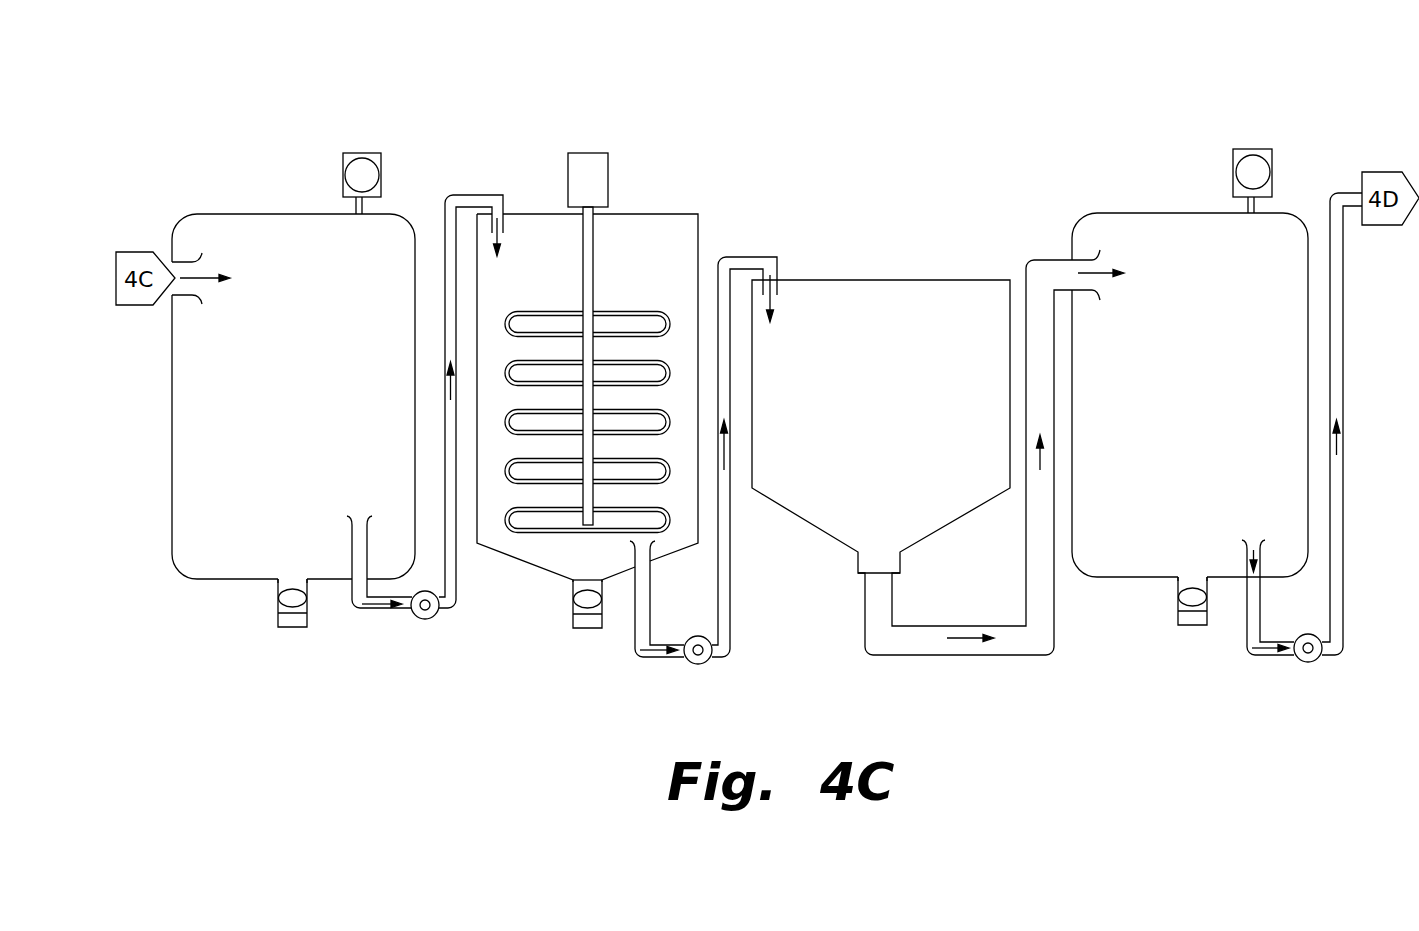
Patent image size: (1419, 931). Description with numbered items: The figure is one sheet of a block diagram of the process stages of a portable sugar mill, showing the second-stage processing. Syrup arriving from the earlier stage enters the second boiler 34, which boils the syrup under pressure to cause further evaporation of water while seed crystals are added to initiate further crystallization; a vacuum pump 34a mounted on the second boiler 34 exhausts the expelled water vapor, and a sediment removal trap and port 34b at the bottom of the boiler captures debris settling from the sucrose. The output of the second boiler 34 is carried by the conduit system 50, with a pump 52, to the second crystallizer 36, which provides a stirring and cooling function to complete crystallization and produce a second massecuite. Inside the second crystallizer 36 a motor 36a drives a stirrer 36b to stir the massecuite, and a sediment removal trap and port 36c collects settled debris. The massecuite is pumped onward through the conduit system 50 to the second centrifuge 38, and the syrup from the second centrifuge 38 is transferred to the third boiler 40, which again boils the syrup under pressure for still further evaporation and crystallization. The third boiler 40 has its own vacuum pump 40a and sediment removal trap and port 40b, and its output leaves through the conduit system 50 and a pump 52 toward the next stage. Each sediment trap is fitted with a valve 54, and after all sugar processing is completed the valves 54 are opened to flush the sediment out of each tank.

The second boiler 34 is at (230, 214).
The vacuum pump 34a is at (362, 153).
The sediment removal trap and port 34b is at (292, 566).
The second crystallizer 36 is at (580, 374).
The motor 36a is at (590, 153).
The stirrer 36b is at (522, 535).
The sediment removal trap and port 36c is at (585, 570).
The second centrifuge 38 is at (915, 280).
The third boiler 40 is at (1128, 213).
The vacuum pump 40a is at (1253, 150).
The sediment removal trap and port 40b is at (1193, 566).
The conduit system 50 is at (731, 603).
The pump 52 is at (417, 621).
The valve 54 is at (278, 603).